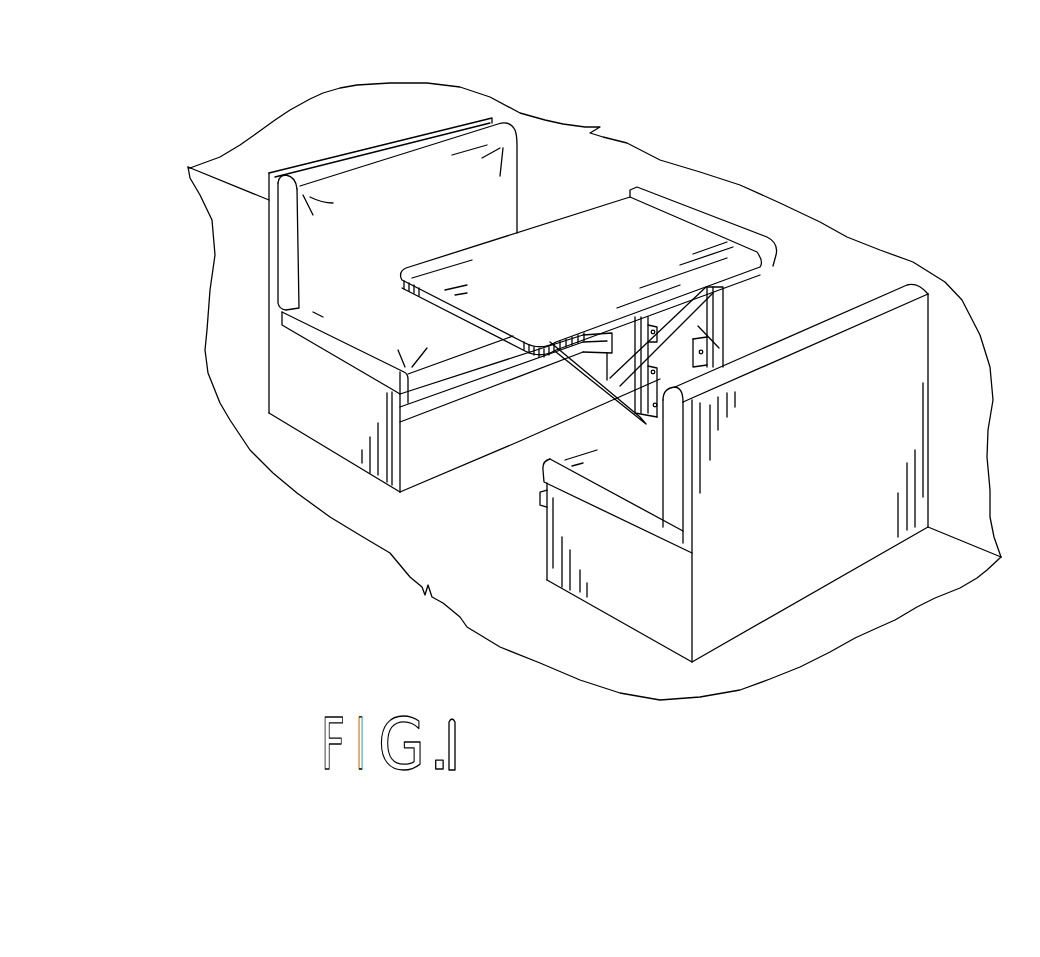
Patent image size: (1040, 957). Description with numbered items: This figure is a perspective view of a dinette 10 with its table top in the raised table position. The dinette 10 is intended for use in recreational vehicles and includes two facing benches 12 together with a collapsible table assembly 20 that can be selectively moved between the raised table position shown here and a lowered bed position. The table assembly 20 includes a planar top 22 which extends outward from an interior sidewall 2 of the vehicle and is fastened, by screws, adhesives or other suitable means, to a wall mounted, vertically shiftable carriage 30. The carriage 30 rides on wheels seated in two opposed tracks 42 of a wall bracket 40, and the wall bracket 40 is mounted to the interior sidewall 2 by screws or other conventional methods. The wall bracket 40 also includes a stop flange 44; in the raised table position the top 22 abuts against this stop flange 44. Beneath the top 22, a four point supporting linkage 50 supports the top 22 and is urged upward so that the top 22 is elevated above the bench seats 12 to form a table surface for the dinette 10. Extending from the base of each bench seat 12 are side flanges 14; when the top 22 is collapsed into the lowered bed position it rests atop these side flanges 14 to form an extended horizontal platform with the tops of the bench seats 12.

The interior sidewall 2 is at (843, 262).
The dinette 10 is at (747, 137).
The bench 12 is at (287, 370).
The side flange 14 is at (437, 407).
The collapsible table assembly 20 is at (652, 284).
The planar top 22 is at (497, 270).
The carriage 30 is at (698, 326).
The wall bracket 40 is at (691, 355).
The track 42 is at (723, 335).
The stop flange 44 is at (745, 228).
The supporting linkage 50 is at (586, 377).